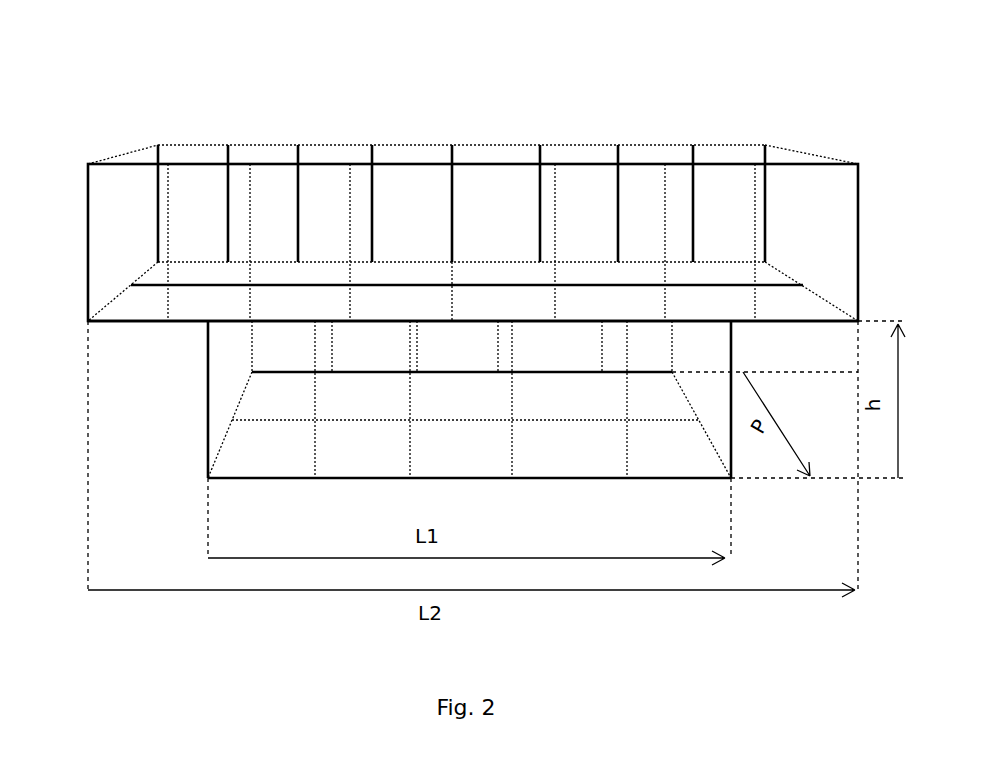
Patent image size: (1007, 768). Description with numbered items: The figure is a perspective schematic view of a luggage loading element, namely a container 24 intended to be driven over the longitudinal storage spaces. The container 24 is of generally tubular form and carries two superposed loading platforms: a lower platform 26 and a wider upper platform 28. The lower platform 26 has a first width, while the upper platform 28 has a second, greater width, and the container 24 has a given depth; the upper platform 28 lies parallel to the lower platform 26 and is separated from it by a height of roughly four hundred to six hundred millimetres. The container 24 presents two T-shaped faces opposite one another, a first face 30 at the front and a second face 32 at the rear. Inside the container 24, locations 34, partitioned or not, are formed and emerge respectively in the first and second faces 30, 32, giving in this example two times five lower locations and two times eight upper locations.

The container 24 is at (721, 72).
The lower platform 26 is at (612, 457).
The upper platform 28 is at (693, 313).
The first face 30 is at (217, 311).
The second face 32 is at (510, 202).
The locations 34 is at (397, 318).